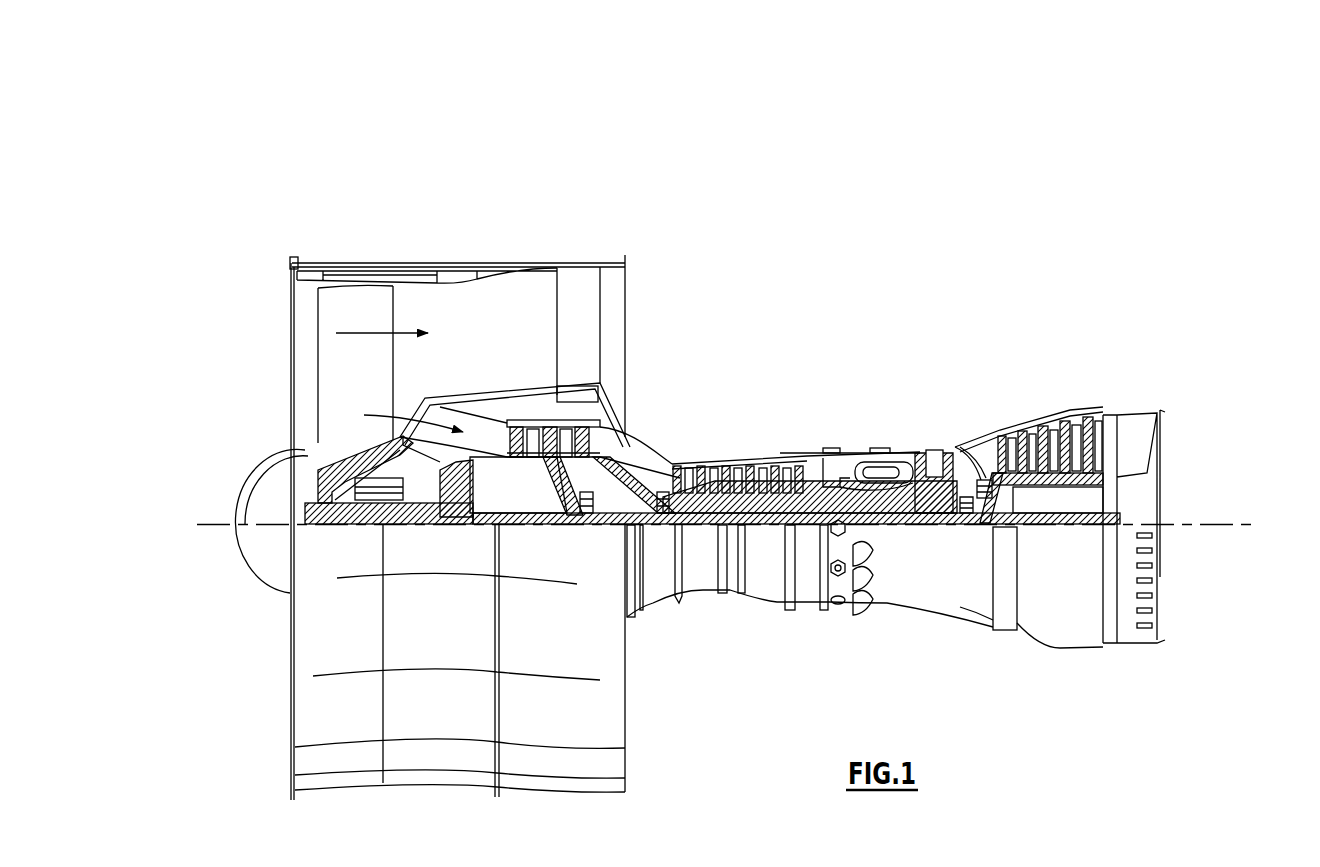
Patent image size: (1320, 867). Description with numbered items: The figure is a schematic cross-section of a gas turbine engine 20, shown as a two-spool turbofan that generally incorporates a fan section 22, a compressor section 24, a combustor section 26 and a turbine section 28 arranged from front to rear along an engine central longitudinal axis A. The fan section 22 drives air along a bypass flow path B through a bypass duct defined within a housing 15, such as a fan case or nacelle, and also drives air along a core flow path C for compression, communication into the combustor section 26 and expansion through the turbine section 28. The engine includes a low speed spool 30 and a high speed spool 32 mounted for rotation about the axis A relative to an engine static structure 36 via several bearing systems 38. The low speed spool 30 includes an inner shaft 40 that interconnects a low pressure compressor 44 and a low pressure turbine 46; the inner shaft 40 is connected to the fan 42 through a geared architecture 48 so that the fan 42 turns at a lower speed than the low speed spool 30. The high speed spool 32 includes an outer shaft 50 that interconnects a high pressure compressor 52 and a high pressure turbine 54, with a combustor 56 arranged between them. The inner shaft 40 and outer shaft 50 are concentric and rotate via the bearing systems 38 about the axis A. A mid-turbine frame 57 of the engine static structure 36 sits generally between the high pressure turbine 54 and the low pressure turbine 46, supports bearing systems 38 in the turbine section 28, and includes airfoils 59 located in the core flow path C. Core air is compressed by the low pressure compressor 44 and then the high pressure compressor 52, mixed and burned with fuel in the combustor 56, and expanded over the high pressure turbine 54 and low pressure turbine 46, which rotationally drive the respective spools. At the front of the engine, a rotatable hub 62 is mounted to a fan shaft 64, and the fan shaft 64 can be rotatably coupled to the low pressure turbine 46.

The housing 15 is at (458, 268).
The gas turbine engine 20 is at (880, 311).
The fan section 22 is at (392, 255).
The compressor section 24 is at (670, 438).
The combustor section 26 is at (877, 428).
The turbine section 28 is at (1010, 393).
The low speed spool 30 is at (768, 530).
The high speed spool 32 is at (812, 468).
The engine static structure 36 is at (807, 610).
The bearing systems 38 is at (590, 516).
The inner shaft 40 is at (645, 527).
The fan 42 is at (369, 384).
The low pressure compressor 44 is at (545, 445).
The low pressure turbine 46 is at (1053, 412).
The geared architecture 48 is at (463, 515).
The outer shaft 50 is at (885, 515).
The high pressure compressor 52 is at (752, 490).
The high pressure turbine 54 is at (935, 455).
The combustor 56 is at (877, 468).
The mid-turbine frame 57 is at (976, 441).
The airfoils 59 is at (988, 482).
The rotatable hub 62 is at (330, 450).
The fan shaft 64 is at (303, 500).
The engine central longitudinal axis A is at (1245, 523).
The bypass flow path B is at (368, 332).
The core flow path C is at (406, 415).